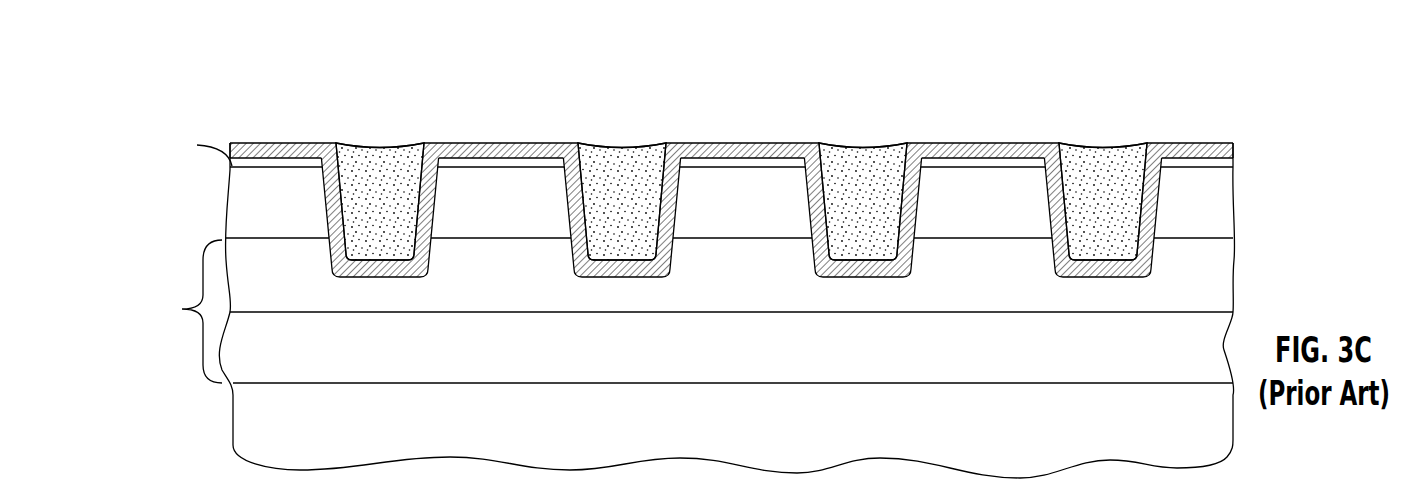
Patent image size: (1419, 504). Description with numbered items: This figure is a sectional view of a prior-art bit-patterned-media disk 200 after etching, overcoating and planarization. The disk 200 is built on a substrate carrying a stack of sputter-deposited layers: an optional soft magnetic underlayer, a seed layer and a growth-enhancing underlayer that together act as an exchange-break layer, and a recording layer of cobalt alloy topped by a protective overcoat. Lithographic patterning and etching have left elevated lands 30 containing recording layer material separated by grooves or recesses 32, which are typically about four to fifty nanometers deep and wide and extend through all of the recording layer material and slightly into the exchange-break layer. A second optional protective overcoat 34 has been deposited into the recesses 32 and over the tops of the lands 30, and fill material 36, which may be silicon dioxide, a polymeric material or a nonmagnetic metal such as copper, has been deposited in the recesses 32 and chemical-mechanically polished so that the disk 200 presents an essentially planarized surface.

The disk 200 is at (244, 67).
The elevated lands 30 is at (282, 142).
The recesses 32 is at (387, 280).
The second protective overcoat 34 is at (255, 141).
The fill material 36 is at (377, 180).